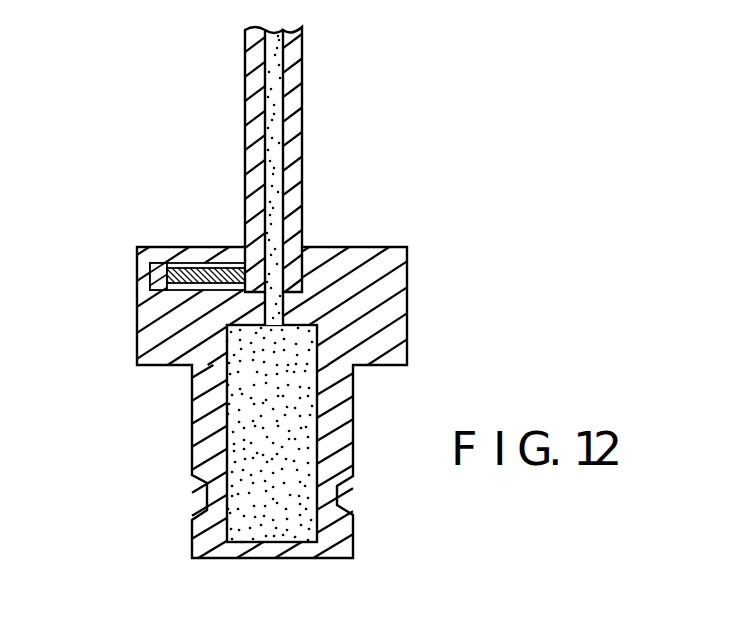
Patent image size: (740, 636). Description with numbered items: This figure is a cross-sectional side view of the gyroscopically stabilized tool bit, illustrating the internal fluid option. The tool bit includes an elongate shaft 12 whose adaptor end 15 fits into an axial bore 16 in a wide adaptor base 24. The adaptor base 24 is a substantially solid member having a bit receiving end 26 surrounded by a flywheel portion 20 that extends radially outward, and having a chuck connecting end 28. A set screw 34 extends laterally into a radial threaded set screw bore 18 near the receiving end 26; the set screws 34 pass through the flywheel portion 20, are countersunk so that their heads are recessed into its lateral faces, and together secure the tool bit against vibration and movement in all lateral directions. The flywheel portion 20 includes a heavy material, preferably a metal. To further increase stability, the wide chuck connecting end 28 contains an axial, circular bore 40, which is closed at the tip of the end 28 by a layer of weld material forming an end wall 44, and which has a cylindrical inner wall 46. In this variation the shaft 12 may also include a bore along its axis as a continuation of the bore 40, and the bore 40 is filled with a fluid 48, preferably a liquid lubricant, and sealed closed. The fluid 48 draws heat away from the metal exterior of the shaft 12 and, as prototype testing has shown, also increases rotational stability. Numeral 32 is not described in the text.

The elongate shaft 12 is at (303, 95).
The adaptor end 15 is at (237, 226).
The axial bore 16 is at (304, 247).
The radial threaded set screw bore 18 is at (212, 267).
The flywheel portion 20 is at (407, 262).
The adaptor base 24 is at (352, 448).
The bit receiving end 26 is at (367, 216).
The chuck connecting end 28 is at (130, 266).
The groove 32 is at (337, 492).
The set screw 34 is at (138, 297).
The axial circular bore 40 is at (313, 412).
The end wall 44 is at (293, 542).
The inner wall 46 is at (313, 343).
The fluid 48 is at (262, 422).